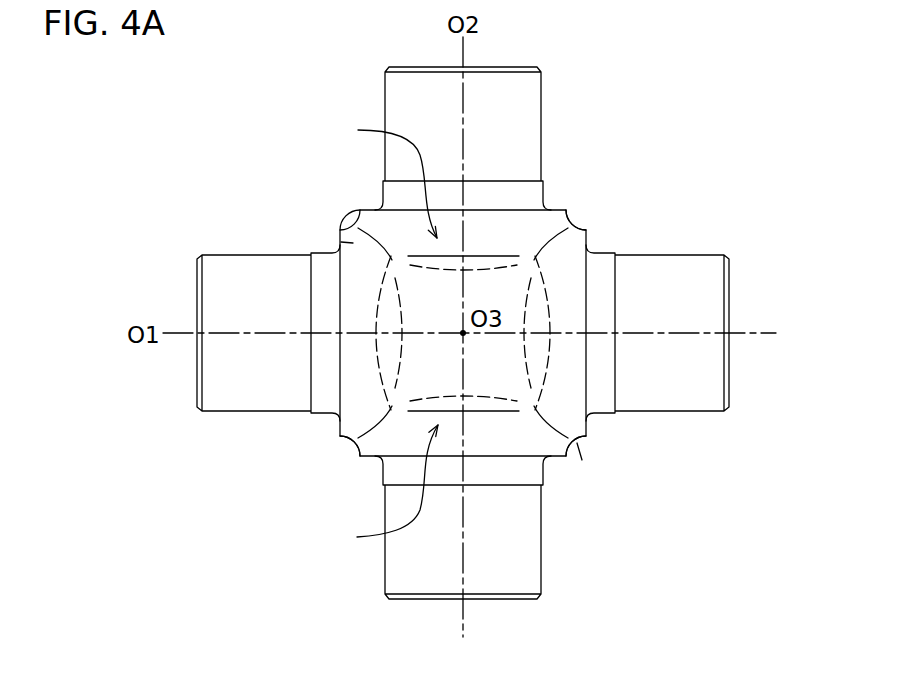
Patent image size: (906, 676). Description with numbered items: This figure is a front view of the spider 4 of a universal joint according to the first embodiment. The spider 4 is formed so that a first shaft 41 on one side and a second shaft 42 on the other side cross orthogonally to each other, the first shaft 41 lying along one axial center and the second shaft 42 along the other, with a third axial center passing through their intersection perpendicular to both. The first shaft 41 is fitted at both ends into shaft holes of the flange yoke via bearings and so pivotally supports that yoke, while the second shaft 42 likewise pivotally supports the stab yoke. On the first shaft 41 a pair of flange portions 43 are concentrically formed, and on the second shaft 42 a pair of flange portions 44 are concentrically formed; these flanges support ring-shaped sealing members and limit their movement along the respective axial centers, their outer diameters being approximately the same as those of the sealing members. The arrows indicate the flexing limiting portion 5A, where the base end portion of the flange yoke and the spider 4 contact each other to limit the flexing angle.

The spider 4 is at (463, 323).
The first shaft 41 is at (248, 293).
The second shaft 42 is at (503, 121).
The flange portions 43 is at (340, 249).
The flange portions 44 is at (559, 197).
The flexing limiting portion 5A is at (384, 334).